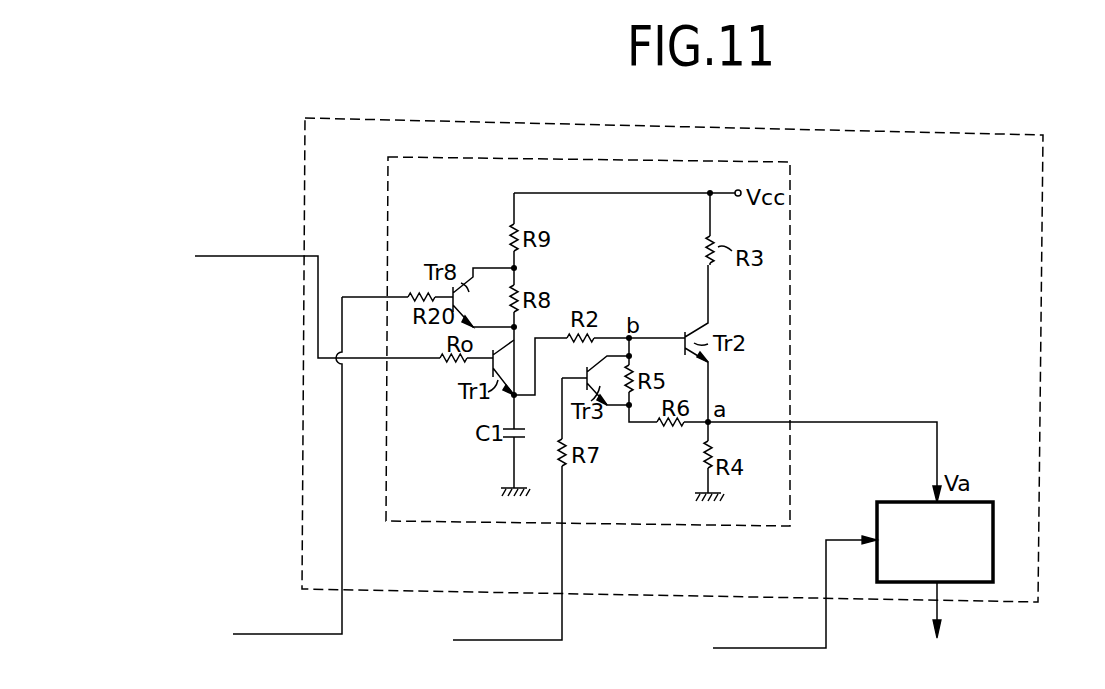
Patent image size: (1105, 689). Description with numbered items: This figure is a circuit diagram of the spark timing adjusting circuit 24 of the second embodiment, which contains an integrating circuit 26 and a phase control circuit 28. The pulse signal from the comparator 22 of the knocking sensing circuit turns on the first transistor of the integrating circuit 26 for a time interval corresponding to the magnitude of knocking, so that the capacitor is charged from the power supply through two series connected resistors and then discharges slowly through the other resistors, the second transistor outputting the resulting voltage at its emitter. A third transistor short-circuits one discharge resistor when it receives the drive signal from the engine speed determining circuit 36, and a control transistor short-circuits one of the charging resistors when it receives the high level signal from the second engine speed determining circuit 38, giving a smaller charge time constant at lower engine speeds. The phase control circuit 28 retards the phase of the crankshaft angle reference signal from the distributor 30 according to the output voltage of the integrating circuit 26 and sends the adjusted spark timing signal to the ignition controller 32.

The comparator 22 is at (317, 295).
The spark timing adjusting circuit 24 is at (1043, 245).
The integrating circuit 26 is at (790, 228).
The phase control circuit 28 is at (993, 540).
The distributor 30 is at (795, 583).
The ignition controller 32 is at (937, 625).
The engine speed determining circuit 36 is at (521, 554).
The second engine speed determining circuit 38 is at (320, 466).